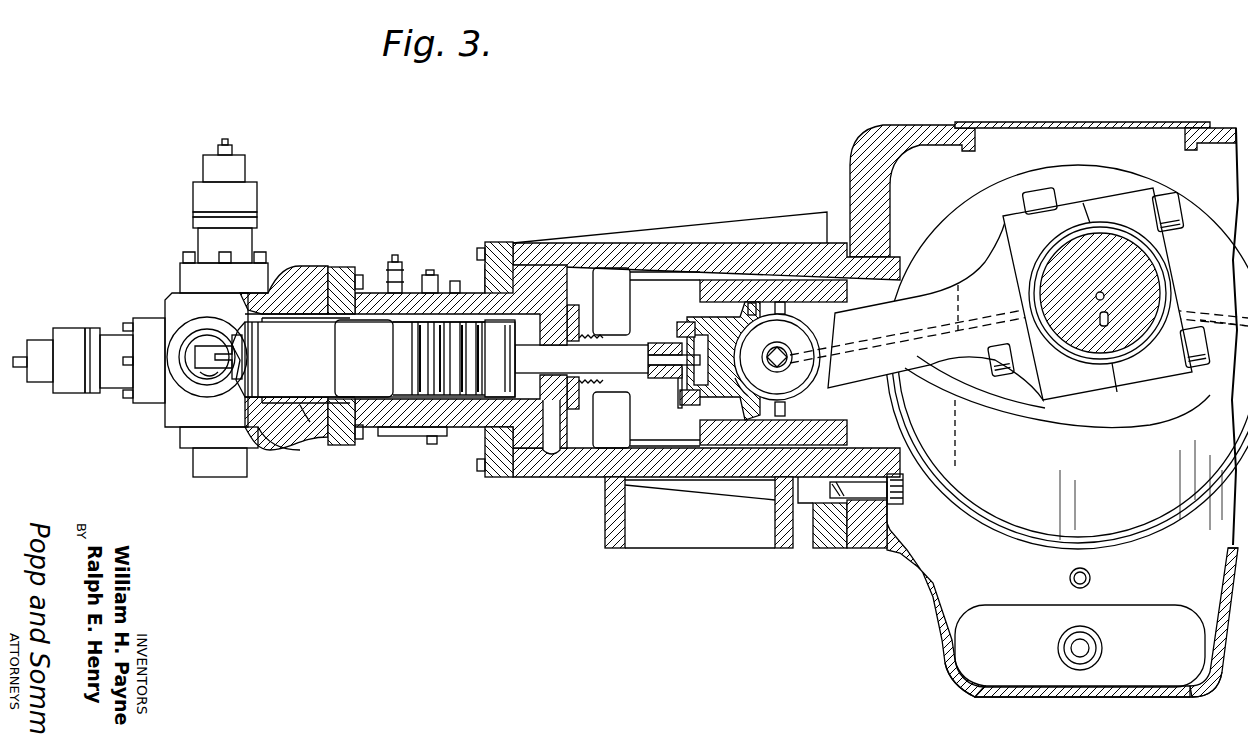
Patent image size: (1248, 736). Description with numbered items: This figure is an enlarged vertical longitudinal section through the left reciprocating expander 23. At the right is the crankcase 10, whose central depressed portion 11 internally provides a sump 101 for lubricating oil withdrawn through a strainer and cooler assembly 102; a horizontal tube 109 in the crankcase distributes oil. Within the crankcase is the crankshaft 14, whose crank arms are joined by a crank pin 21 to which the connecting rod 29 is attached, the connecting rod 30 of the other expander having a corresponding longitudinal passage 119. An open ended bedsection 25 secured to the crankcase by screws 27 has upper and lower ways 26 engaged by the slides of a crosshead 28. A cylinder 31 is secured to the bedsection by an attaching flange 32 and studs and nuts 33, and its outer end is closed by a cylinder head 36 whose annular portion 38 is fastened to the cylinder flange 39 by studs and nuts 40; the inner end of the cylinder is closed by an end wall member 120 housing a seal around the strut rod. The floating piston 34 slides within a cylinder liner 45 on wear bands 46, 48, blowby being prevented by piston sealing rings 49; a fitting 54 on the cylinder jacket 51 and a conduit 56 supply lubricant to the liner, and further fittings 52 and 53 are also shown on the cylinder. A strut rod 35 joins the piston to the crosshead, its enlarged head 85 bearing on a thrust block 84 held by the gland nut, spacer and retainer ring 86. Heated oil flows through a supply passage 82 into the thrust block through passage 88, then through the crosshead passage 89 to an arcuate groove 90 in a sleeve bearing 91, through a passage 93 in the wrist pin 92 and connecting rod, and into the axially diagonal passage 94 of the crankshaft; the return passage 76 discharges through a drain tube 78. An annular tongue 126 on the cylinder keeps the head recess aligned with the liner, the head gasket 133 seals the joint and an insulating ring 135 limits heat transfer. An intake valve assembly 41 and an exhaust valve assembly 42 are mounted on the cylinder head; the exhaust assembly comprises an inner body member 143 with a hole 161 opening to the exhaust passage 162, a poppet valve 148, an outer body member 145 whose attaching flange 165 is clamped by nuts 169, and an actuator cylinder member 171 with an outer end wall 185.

The crankcase 10 is at (893, 130).
The central depressed portion 11 is at (938, 640).
The crankshaft 14 is at (1060, 250).
The crank pin 21 is at (1110, 240).
The reciprocating expander 23 is at (483, 175).
The bedsection 25 is at (672, 243).
The guide surfaces or ways 26 is at (633, 300).
The screws 27 is at (903, 500).
The crosshead 28 is at (712, 305).
The connecting rod 29 is at (930, 305).
The connecting rod 30 is at (1215, 290).
The cylinder 31 is at (482, 290).
The annular attaching flange 32 is at (505, 242).
The studs and nuts 33 is at (482, 248).
The piston 34 is at (330, 368).
The strut rod 35 is at (581, 359).
The cylinder head 36 is at (172, 298).
The annular portion 38 is at (308, 267).
The annular attaching flange 39 is at (340, 267).
The studs and nuts 40 is at (360, 275).
The intake or admission valve assembly 41 is at (190, 190).
The exhaust valve assembly 42 is at (72, 325).
The cylinder liner 45 is at (364, 358).
The annular wear band 46 is at (500, 358).
The annular wear band 48 is at (396, 372).
The piston sealing rings 49 is at (420, 352).
The cylinder jacket 51 is at (410, 436).
The valve 52 is at (445, 275).
The bolt 53 is at (436, 443).
The fitting 54 is at (410, 258).
The conduit 56 is at (459, 290).
The fluid return passage 76 is at (655, 378).
The drain tube 78 is at (677, 400).
The supply passage 82 is at (648, 357).
The thrust block 84 is at (748, 315).
The enlarged head 85 is at (700, 404).
The gland nut, spacer and retainer ring 86 is at (676, 333).
The through passage 88 is at (725, 345).
The passage 89 is at (735, 385).
The arcuate groove 90 is at (770, 352).
The sleeve bearing 91 is at (777, 372).
The wrist pin 92 is at (800, 342).
The passage 93 is at (962, 368).
The axially diagonal passage 94 is at (1100, 328).
The sump 101 is at (1080, 646).
The strainer and cooler assembly 102 is at (1104, 648).
The tube 109 is at (1091, 578).
The longitudinal passage 119 is at (1214, 311).
The packing gland 120 is at (567, 325).
The annular tongue 126 is at (315, 445).
The annular head gasket 133 is at (305, 322).
The insulating ring 135 is at (310, 420).
The inner body member 143 is at (212, 390).
The outer body member 145 is at (112, 333).
The poppet valve 148 is at (242, 366).
The hole 161 is at (232, 352).
The exhaust passage 162 is at (207, 330).
The annular attaching flange 165 is at (145, 410).
The nut 169 is at (128, 398).
The actuator cylinder member 171 is at (70, 392).
The outer end wall 185 is at (40, 372).